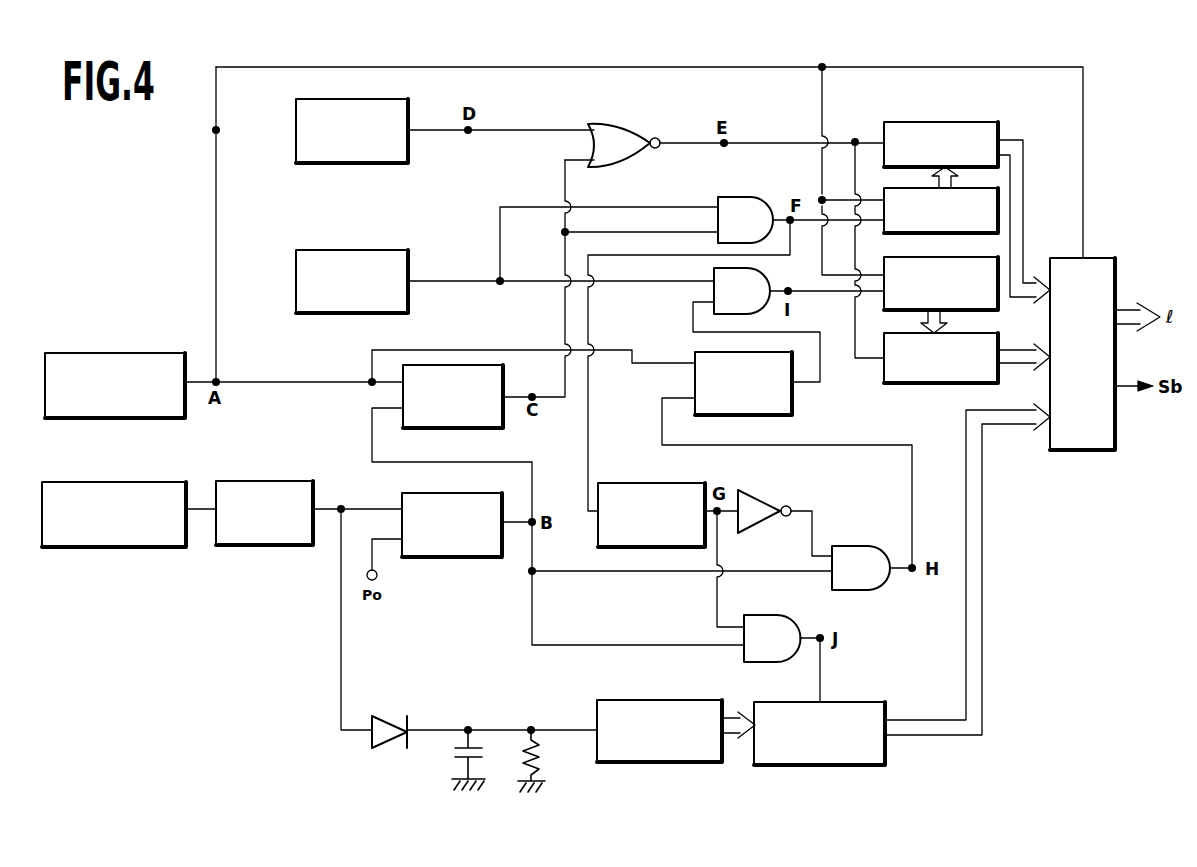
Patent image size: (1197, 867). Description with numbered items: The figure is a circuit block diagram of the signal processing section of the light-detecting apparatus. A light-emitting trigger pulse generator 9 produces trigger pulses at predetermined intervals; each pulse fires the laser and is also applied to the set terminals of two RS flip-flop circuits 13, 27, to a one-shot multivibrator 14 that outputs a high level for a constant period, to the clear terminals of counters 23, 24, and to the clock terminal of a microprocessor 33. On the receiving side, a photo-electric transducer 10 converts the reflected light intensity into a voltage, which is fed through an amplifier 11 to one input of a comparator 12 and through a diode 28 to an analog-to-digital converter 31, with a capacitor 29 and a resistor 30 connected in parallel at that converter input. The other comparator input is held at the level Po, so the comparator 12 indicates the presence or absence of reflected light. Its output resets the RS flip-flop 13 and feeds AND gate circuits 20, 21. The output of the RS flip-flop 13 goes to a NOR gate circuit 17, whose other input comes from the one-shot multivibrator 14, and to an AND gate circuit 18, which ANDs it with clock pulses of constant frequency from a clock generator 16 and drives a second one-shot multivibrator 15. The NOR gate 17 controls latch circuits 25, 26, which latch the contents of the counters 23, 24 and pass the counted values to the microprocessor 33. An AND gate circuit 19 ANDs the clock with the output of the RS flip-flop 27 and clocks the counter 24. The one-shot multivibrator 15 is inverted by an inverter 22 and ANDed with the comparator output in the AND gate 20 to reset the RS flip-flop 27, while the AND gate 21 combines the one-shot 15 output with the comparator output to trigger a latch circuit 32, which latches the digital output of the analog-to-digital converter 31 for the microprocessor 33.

The light-emitting trigger pulse generator 9 is at (155, 353).
The photo-electric transducer 10 is at (134, 482).
The amplifier 11 is at (262, 481).
The comparator 12 is at (453, 557).
The RS flip-flop circuit 13 is at (447, 365).
The one-shot multivibrator 14 is at (348, 163).
The one-shot multivibrator 15 is at (643, 483).
The clock generator 16 is at (360, 250).
The NOR gate circuit 17 is at (632, 124).
The AND gate circuit 18 is at (750, 197).
The AND gate circuit 19 is at (765, 275).
The AND gate circuit 20 is at (855, 546).
The AND gate circuit 21 is at (780, 607).
The inverter 22 is at (762, 493).
The counter 23 is at (998, 205).
The counter 24 is at (993, 257).
The latch circuit 25 is at (928, 122).
The latch circuit 26 is at (928, 383).
The RS flip-flop circuit 27 is at (792, 398).
The diode 28 is at (387, 716).
The capacitor 29 is at (452, 749).
The resistor 30 is at (545, 760).
The analog-to-digital converter 31 is at (658, 700).
The latch circuit 32 is at (870, 702).
The microprocessor 33 is at (1100, 258).